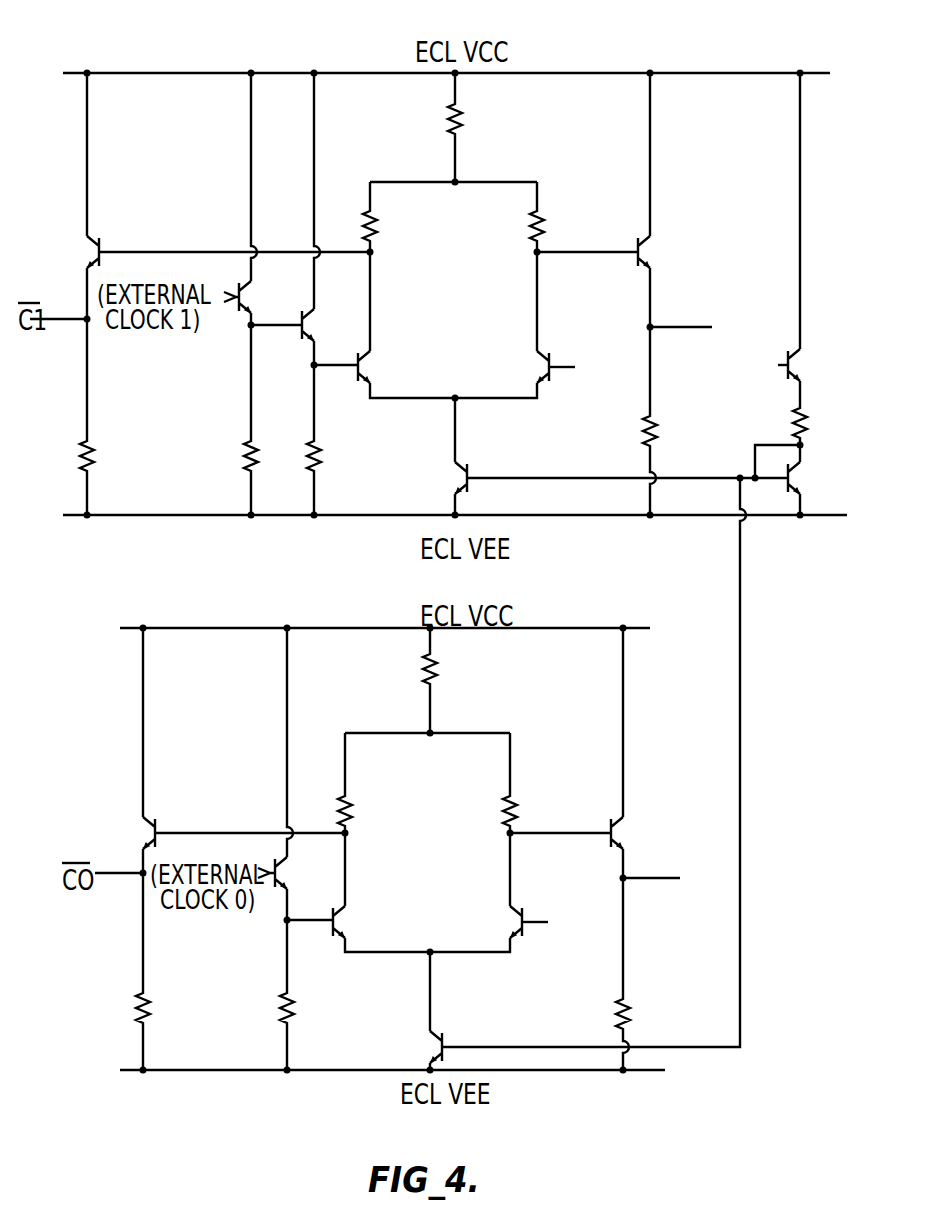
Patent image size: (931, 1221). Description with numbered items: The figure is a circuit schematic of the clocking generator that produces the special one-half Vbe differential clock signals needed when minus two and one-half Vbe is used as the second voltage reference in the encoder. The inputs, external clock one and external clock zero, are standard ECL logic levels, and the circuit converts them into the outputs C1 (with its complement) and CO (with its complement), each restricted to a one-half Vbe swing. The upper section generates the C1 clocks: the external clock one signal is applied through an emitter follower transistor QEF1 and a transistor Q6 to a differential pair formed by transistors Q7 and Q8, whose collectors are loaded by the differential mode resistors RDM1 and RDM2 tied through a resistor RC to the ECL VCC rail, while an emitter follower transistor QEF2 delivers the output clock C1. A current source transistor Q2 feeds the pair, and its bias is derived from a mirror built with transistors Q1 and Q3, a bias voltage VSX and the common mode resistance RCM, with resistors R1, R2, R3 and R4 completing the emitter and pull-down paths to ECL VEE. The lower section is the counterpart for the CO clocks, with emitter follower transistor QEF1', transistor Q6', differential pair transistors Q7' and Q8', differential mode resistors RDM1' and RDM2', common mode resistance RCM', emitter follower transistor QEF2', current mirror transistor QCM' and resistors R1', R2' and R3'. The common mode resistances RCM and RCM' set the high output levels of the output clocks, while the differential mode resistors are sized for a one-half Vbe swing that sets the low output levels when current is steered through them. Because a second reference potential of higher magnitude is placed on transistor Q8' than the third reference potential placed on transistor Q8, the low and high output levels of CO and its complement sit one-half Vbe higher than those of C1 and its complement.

The emitter follower transistor QEF1 is at (69, 251).
The transistor Q6 is at (325, 326).
The differential pair transistor Q7 is at (380, 368).
The transistor Q8 is at (585, 369).
The emitter follower transistor QEF2 is at (675, 254).
The current source transistor Q2 is at (443, 479).
The current mirror transistor Q3 is at (811, 481).
The transistor Q1 is at (811, 366).
The bias voltage VSX is at (761, 365).
The resistor R1 is at (69, 456).
The resistor R2 is at (235, 459).
The resistor R3 is at (299, 459).
The resistor R4 is at (633, 431).
The collector resistor RC is at (506, 130).
The common mode resistance RCM is at (824, 422).
The differential mode resistor RDM1 is at (415, 238).
The differential mode resistor RDM2 is at (509, 238).
The clock output C1 is at (697, 327).
The emitter follower transistor QEF1' is at (126, 831).
The transistor Q6' is at (301, 876).
The differential pair transistor Q7' is at (359, 923).
The transistor Q8' is at (534, 938).
The emitter follower transistor QEF2' is at (653, 835).
The current mirror transistor QCM' is at (412, 1045).
The resistor R1' is at (124, 1006).
The resistor R2' is at (264, 1007).
The resistor R3' is at (604, 1010).
The common mode resistance RCM' is at (472, 680).
The differential mode resistor RDM1' is at (389, 818).
The differential mode resistor RDM2' is at (476, 818).
The clock output C0 CO is at (671, 883).